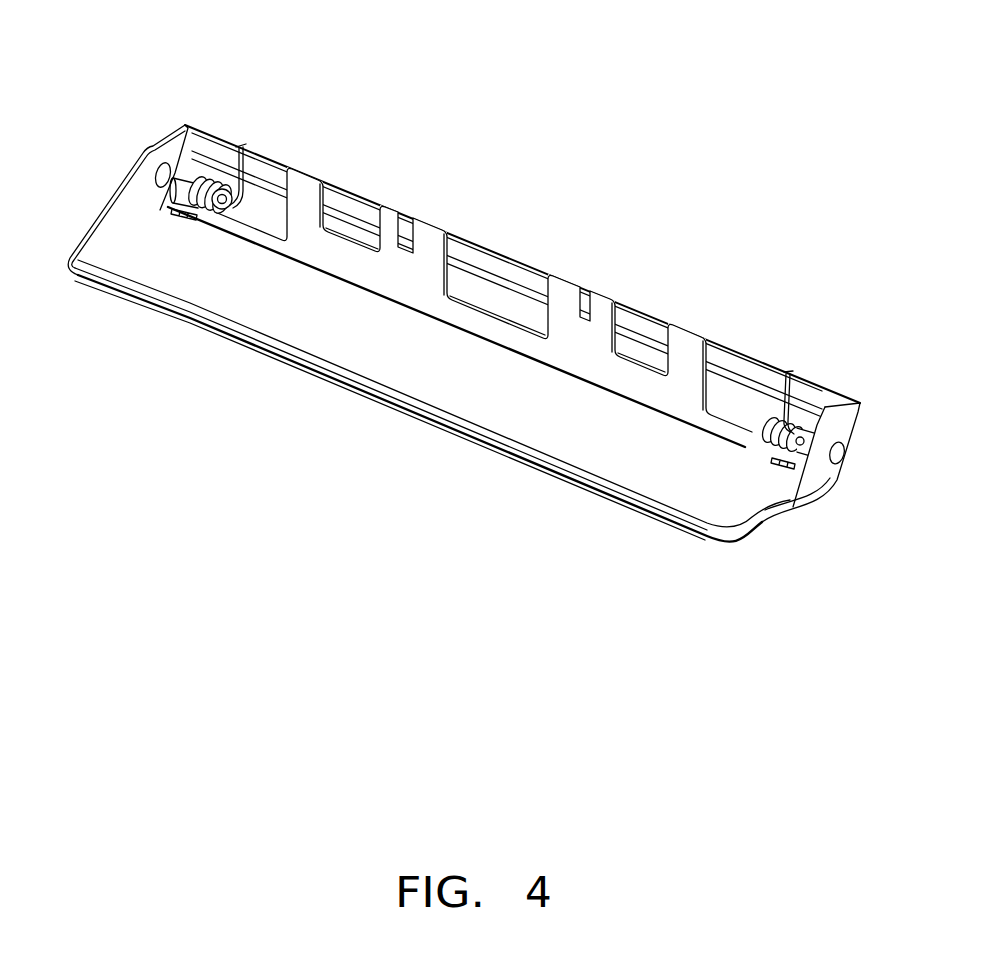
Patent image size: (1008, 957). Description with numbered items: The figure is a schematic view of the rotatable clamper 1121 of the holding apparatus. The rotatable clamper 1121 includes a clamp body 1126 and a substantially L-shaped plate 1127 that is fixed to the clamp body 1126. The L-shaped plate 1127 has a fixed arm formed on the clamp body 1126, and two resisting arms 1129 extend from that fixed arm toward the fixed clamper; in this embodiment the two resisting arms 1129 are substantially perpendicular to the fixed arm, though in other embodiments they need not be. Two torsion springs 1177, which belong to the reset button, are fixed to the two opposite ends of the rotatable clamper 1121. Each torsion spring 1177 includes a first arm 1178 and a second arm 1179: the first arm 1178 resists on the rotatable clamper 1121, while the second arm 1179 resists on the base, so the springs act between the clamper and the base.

The rotatable clamper 1121 is at (238, 78).
The clamp body 1126 is at (309, 384).
The L-shaped plate 1127 is at (481, 328).
The resisting arms 1129 is at (432, 236).
The torsion springs 1177 is at (188, 188).
The first arm 1178 is at (176, 212).
The second arm 1179 is at (246, 148).